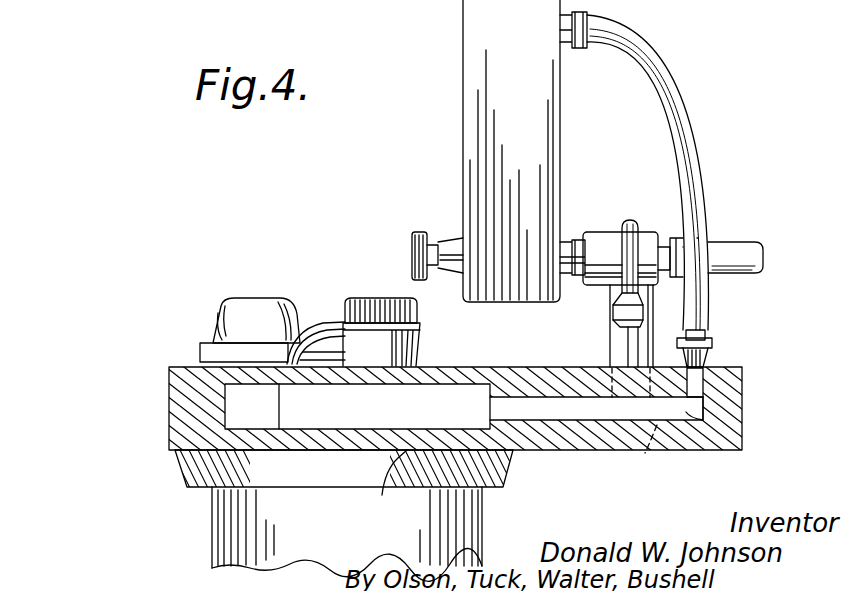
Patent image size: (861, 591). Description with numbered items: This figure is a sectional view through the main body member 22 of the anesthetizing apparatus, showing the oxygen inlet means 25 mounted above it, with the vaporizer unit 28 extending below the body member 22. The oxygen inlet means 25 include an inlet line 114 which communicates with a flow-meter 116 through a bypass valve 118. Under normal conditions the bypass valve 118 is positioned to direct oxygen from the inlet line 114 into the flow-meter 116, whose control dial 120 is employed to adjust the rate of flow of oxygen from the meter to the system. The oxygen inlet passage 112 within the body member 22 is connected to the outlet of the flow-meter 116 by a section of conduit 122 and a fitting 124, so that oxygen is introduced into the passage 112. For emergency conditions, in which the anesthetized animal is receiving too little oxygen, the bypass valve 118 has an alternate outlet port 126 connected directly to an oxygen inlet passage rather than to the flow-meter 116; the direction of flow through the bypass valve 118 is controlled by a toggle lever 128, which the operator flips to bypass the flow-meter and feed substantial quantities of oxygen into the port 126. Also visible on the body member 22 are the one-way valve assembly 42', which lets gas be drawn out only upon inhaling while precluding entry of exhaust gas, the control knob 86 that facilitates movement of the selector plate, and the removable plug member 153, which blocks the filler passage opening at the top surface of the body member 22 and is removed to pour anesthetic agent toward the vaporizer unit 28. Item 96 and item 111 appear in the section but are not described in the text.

The main body member 22 is at (188, 391).
The oxygen inlet means 25 is at (683, 61).
The vaporizer unit 28 is at (486, 527).
The one-way valve assembly 42' is at (250, 297).
The control knob 86 is at (326, 322).
The bore 96 is at (391, 488).
The passage 111 is at (643, 455).
The oxygen inlet passage 112 is at (705, 410).
The inlet line 114 is at (745, 252).
The flow-meter 116 is at (470, 115).
The bypass valve 118 is at (606, 237).
The control dial 120 is at (414, 238).
The conduit 122 is at (683, 72).
The fitting 124 is at (714, 347).
The alternate outlet port 126 is at (611, 340).
The toggle lever 128 is at (639, 228).
The removable plug member 153 is at (392, 342).